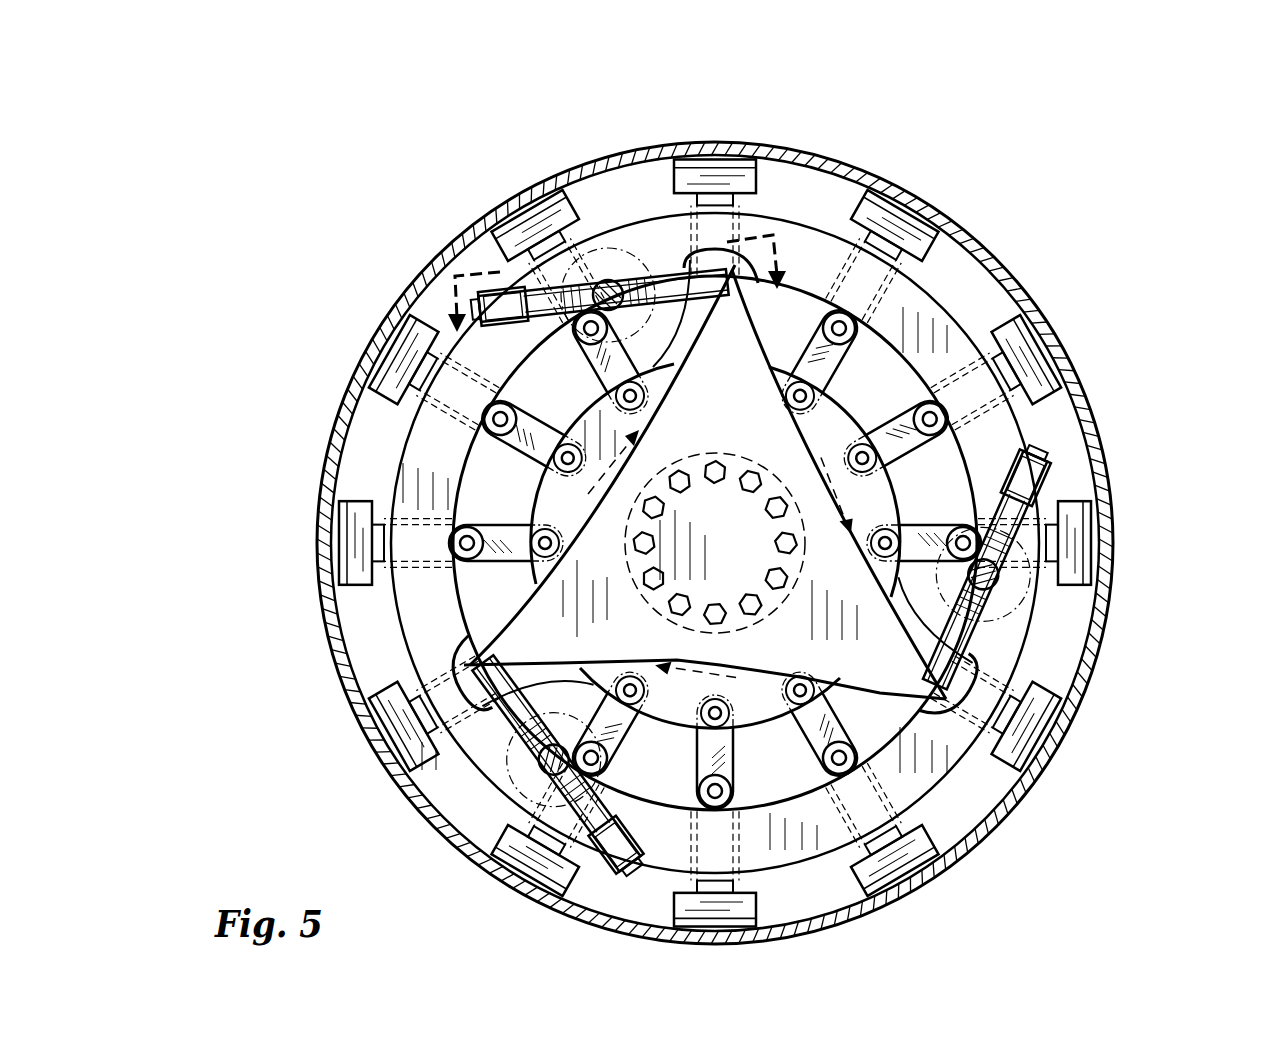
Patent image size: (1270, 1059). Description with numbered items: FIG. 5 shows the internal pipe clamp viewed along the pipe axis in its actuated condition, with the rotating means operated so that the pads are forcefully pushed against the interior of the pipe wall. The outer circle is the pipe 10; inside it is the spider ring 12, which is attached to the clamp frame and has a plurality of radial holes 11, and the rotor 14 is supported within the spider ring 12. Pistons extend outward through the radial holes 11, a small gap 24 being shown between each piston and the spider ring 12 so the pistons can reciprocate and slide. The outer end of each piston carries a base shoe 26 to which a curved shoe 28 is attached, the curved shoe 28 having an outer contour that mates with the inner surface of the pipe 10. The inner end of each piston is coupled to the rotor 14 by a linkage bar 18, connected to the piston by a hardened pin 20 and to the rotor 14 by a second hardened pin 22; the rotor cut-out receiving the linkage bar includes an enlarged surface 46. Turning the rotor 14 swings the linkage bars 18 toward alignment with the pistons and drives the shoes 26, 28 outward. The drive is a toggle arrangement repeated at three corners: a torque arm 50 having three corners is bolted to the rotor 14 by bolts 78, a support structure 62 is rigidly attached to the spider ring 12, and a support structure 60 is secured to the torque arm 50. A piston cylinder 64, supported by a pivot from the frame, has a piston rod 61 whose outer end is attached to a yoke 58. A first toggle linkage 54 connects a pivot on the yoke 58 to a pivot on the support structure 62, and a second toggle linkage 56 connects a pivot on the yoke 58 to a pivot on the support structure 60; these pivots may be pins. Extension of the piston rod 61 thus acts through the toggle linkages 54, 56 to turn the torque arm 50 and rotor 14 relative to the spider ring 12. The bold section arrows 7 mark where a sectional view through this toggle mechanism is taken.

The section line 7- 7 is at (608, 279).
The pipe 10 is at (832, 165).
The radial holes 11 is at (1012, 387).
The spider ring 12 is at (430, 625).
The rotor 14 is at (767, 700).
The linkage bar 18 is at (842, 388).
The hardened pin 20 is at (926, 408).
The second hardened pin 22 is at (533, 540).
The gap 24 is at (952, 372).
The base shoe 26 is at (1022, 345).
The curved shoe 28 is at (1022, 353).
The enlarged surface 46 is at (580, 443).
The torque arm 50 is at (545, 626).
The first toggle linkage 54 is at (538, 300).
The second toggle linkage 56 is at (668, 352).
The yoke 58 is at (1062, 577).
The support structure 60 is at (727, 298).
The piston rod 61 is at (597, 278).
The support structure 62 is at (522, 318).
The piston cylinder 64 is at (652, 278).
The bolts 78 is at (718, 484).